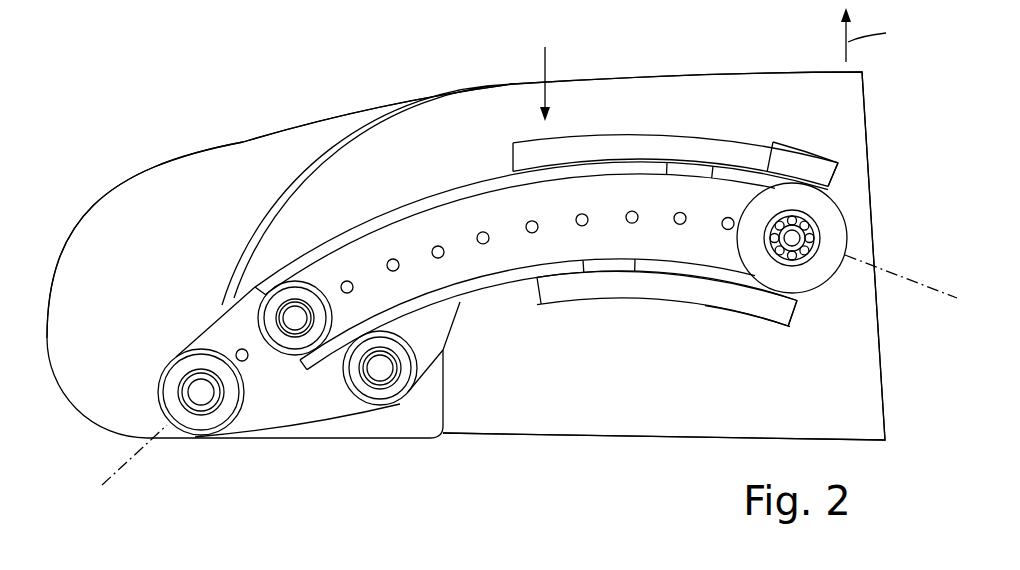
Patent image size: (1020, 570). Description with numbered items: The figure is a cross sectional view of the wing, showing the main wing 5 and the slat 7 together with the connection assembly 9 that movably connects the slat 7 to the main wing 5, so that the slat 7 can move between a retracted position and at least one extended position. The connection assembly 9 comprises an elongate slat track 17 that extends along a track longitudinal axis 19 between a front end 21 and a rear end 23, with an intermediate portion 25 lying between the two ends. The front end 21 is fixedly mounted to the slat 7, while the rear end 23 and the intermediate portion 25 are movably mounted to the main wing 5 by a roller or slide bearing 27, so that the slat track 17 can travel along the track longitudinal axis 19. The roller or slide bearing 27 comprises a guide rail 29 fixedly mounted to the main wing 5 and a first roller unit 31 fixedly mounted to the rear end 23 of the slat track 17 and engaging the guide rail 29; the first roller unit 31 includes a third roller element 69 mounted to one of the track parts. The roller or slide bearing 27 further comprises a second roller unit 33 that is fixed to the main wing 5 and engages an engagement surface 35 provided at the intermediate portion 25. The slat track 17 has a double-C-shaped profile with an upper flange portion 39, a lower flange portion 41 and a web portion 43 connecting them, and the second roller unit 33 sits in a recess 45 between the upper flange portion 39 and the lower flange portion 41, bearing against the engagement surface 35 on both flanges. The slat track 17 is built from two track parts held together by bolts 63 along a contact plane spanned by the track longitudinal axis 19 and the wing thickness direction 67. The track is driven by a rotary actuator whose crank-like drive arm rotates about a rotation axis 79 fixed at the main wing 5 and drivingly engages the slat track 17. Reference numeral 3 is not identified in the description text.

The bending tool 3 is at (110, 132).
The main wing 5 is at (733, 378).
The slat 7 is at (106, 305).
The connection assembly 9 is at (544, 69).
The slat track 17 is at (447, 207).
The track longitudinal axis 19 is at (935, 298).
The front end 21 is at (297, 410).
The rear end 23 is at (768, 178).
The intermediate portion 25 is at (508, 262).
The roller or slide bearing 27 is at (545, 218).
The guide rail 29 is at (722, 148).
The first roller unit 31 is at (819, 275).
The second roller unit 33 is at (296, 281).
The engagement surface 35 is at (497, 205).
The upper flange portion 39 is at (396, 190).
The lower flange portion 41 is at (572, 263).
The web portion 43 is at (549, 243).
The recess 45 is at (603, 240).
The bolts 63 is at (392, 259).
The wing thickness direction 67 is at (880, 35).
The third roller element 69 is at (838, 229).
The rotation axis 79 is at (801, 309).